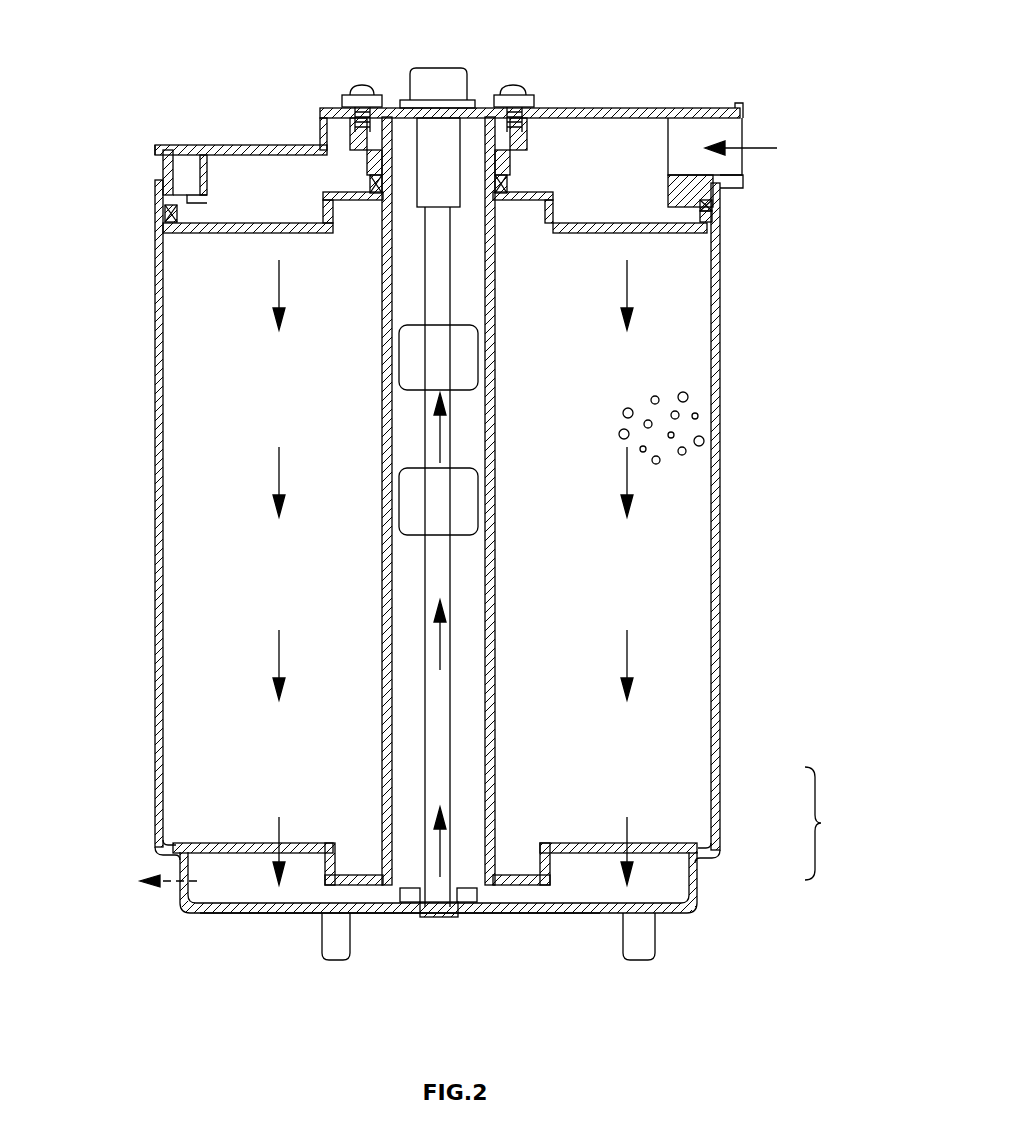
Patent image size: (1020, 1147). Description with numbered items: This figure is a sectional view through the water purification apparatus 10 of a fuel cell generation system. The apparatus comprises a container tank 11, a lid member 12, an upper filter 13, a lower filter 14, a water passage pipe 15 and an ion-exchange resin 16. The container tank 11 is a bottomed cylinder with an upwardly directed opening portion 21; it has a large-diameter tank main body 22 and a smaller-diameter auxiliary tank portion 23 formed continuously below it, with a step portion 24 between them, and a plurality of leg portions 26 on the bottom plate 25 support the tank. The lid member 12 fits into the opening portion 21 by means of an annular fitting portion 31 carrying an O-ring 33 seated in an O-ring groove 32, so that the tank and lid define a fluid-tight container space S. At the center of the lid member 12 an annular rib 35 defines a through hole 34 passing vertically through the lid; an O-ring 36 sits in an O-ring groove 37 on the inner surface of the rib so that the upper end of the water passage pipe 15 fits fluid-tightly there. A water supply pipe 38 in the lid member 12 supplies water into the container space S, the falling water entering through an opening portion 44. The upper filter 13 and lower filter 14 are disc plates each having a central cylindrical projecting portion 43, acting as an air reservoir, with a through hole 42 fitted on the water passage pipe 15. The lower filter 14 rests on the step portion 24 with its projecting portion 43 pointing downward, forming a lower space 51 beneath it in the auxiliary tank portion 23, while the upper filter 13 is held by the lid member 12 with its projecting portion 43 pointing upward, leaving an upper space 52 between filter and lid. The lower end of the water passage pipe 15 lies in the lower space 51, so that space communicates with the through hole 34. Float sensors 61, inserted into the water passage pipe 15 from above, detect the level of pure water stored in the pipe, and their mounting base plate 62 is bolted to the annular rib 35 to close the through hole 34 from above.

The water purification apparatus 10 is at (764, 66).
The container tank 11 is at (828, 823).
The lid member 12 is at (230, 138).
The upper filter 13 is at (220, 235).
The lower filter 14 is at (210, 846).
The water passage pipe 15 is at (493, 628).
The ion-exchange resin 16 is at (704, 441).
The opening portion 21 is at (182, 185).
The tank main body 22 is at (718, 770).
The auxiliary tank portion 23 is at (697, 880).
The step portion 24 is at (170, 845).
The bottom plate 25 is at (222, 915).
The leg portions 26 is at (338, 958).
The fitting portion 31 is at (165, 212).
The O-ring groove 32 is at (710, 215).
The O-ring 33 is at (712, 206).
The through hole 34 is at (490, 170).
The annular rib 35 is at (530, 165).
The O-ring 36 is at (437, 66).
The O-ring groove 37 is at (448, 195).
The water supply pipe 38 is at (690, 125).
The through hole 42 is at (392, 125).
The projecting portion 43 is at (343, 100).
The opening portion 44 is at (610, 118).
The lower space 51 is at (298, 880).
The upper space 52 is at (262, 180).
The float sensors 61 is at (402, 370).
The mounting base plate 62 is at (500, 180).
The container space S is at (660, 568).